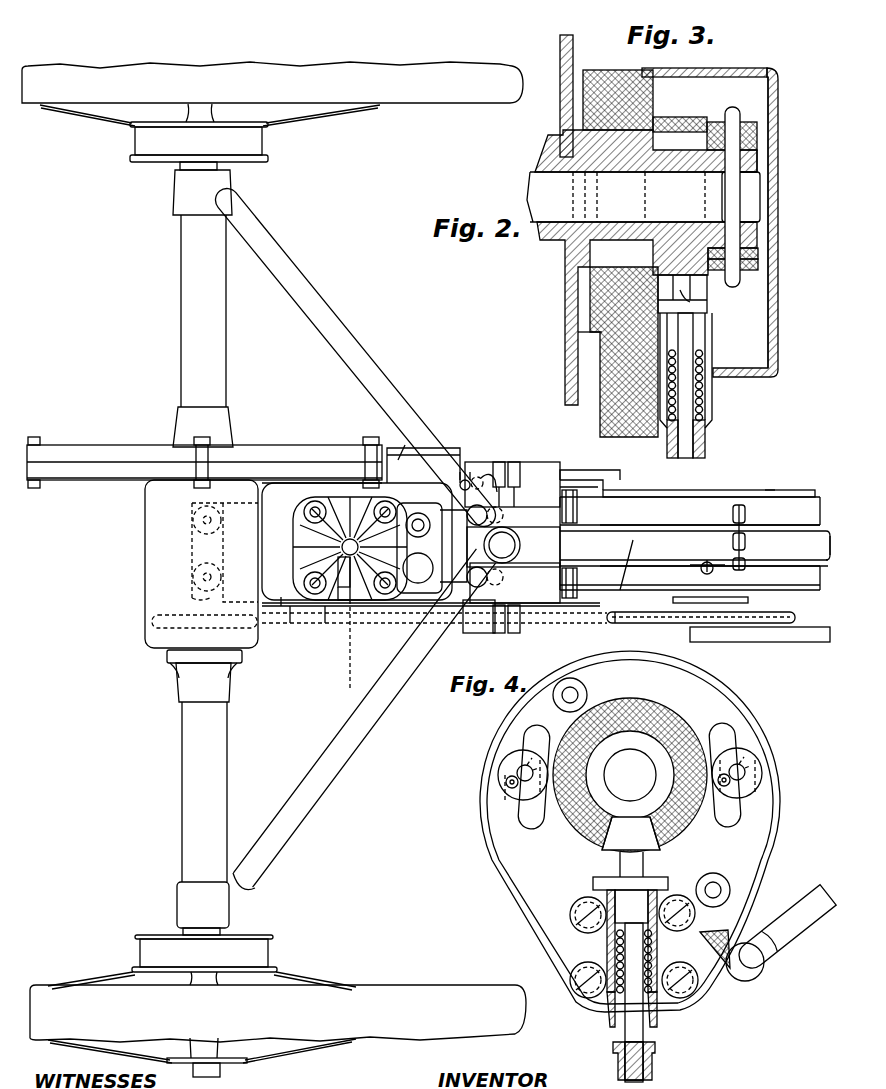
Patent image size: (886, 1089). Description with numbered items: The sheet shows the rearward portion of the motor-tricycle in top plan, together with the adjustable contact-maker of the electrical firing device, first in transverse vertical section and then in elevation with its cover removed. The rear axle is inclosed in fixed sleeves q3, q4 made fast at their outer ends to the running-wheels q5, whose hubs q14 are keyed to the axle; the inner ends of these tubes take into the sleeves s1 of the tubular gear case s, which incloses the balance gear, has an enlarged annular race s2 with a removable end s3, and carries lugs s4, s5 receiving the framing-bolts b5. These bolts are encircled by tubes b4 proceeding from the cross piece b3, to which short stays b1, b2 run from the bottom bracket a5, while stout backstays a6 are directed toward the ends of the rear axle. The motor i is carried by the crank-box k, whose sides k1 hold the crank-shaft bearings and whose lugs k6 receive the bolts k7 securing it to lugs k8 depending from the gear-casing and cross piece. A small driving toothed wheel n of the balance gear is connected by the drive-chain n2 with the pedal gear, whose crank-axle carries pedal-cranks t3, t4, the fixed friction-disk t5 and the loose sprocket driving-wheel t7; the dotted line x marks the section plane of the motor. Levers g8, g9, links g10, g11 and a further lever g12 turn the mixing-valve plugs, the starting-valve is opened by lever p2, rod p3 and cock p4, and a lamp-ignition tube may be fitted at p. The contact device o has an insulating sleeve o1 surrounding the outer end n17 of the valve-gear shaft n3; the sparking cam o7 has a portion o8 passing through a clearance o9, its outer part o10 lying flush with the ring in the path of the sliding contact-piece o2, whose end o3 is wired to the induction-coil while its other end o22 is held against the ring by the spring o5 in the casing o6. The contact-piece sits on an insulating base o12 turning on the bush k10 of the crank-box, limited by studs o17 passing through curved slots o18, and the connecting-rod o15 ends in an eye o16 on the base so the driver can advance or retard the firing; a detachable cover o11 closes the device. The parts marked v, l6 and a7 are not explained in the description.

In FIG. 2, the running-wheels q5 is at (452, 105).
In FIG. 2, the hubs of the running-wheels q14 is at (206, 112).
In FIG. 2, the pulley v is at (268, 139).
In FIG. 2, the fixed sleeve (axle-tube) q3 is at (228, 326).
In FIG. 2, the fixed sleeve (axle-tube) q4 is at (228, 753).
In FIG. 2, the sleeves of the gear case s1 is at (232, 418).
In FIG. 2, the backstays a6 is at (348, 335).
In FIG. 2, the removable end of the gear case s3 is at (125, 457).
In FIG. 2, the enlarged annular race s2 is at (108, 472).
In FIG. 2, the gear case or cover s is at (152, 569).
In FIG. 2, the lugs k8 is at (192, 507).
In FIG. 2, the bolts k7 is at (193, 521).
In FIG. 2, the lugs or projections on the crank-box k6 is at (194, 566).
In FIG. 2, the small driving toothed wheel n is at (150, 621).
In FIG. 2, the motor i is at (283, 514).
In FIG. 2, the fixed clutch-plate or friction-disk t5 is at (338, 488).
In FIG. 2, the lamp-ignition tube p is at (350, 548).
In FIG. 2, the cock p4 is at (337, 566).
In FIG. 2, the lever block l6 is at (420, 503).
In FIG. 2, the cover o11 is at (464, 472).
In FIG. 3, the cover o11 is at (780, 328).
In FIG. 2, the eye o16 is at (490, 470).
In FIG. 4, the eye o16 is at (757, 985).
In FIG. 2, the lug of the gear case s4 is at (405, 445).
In FIG. 2, the rearwardly-directed tubes or sleeves b4 is at (426, 445).
In FIG. 2, the short stay b2 is at (538, 500).
In FIG. 2, the connecting bolts or stays b5 is at (510, 462).
In FIG. 2, the junction or cross piece b3 is at (482, 632).
In FIG. 2, the short stay b1 is at (540, 605).
In FIG. 2, the dotted section line x is at (335, 645).
In FIG. 2, the crank-box k is at (281, 600).
In FIG. 2, the lug of the gear case s5 is at (290, 625).
In FIG. 2, the drive-chain n2 is at (325, 626).
In FIG. 2, the lever p2 is at (752, 558).
In FIG. 2, the bottom bracket a5 is at (742, 489).
In FIG. 2, the connecting-rod o15 is at (772, 489).
In FIG. 4, the connecting-rod o15 is at (811, 903).
In FIG. 2, the handle or lever g8 is at (572, 495).
In FIG. 2, the handle or lever g9 is at (576, 600).
In FIG. 2, the link g10 is at (668, 525).
In FIG. 2, the link g11 is at (656, 564).
In FIG. 2, the lever or handle g12 is at (748, 510).
In FIG. 2, the rod p3 is at (620, 588).
In FIG. 2, the shaft end a7 is at (796, 576).
In FIG. 2, the loose sprocket driving-wheel t7 is at (678, 624).
In FIG. 2, the pedal-crank t3 is at (760, 643).
In FIG. 2, the pedal-crank t4 is at (640, 470).
In FIG. 3, the electrical contact device o is at (711, 94).
In FIG. 3, the portion of the sparking cam o8 is at (705, 194).
In FIG. 4, the portion of the sparking cam o8 is at (631, 834).
In FIG. 3, the valve-gear shaft n3 is at (642, 197).
In FIG. 3, the outer end of the valve-gear shaft n17 is at (722, 197).
In FIG. 4, the outer end of the valve-gear shaft n17 is at (630, 775).
In FIG. 3, the bush on the crank-box k10 is at (562, 258).
In FIG. 3, the sides of the crank-box k1 is at (580, 346).
In FIG. 3, the base o12 is at (606, 352).
In FIG. 3, the clearance o9 is at (760, 250).
In FIG. 4, the clearance o9 is at (590, 843).
In FIG. 3, the outer part of the sparking cam o10 is at (760, 262).
In FIG. 4, the outer part of the sparking cam o10 is at (652, 852).
In FIG. 3, the insulating sleeve or ring o1 is at (742, 270).
In FIG. 4, the insulating sleeve or ring o1 is at (627, 704).
In FIG. 3, the sparking piece or cam o7 is at (758, 162).
In FIG. 4, the sparking piece or cam o7 is at (635, 810).
In FIG. 3, the sliding contact-piece o2 is at (692, 330).
In FIG. 4, the sliding contact-piece o2 is at (630, 934).
In FIG. 3, the end of the contact-piece o22 is at (694, 294).
In FIG. 4, the end of the contact-piece o22 is at (624, 859).
In FIG. 3, the end of the contact-piece o3 is at (694, 436).
In FIG. 4, the end of the contact-piece o3 is at (653, 1067).
In FIG. 3, the encircling spring o5 is at (706, 393).
In FIG. 4, the encircling spring o5 is at (607, 953).
In FIG. 3, the casing o6 is at (712, 413).
In FIG. 4, the casing o6 is at (605, 973).
In FIG. 4, the curved slots o18 is at (524, 826).
In FIG. 4, the studs o17 is at (512, 781).